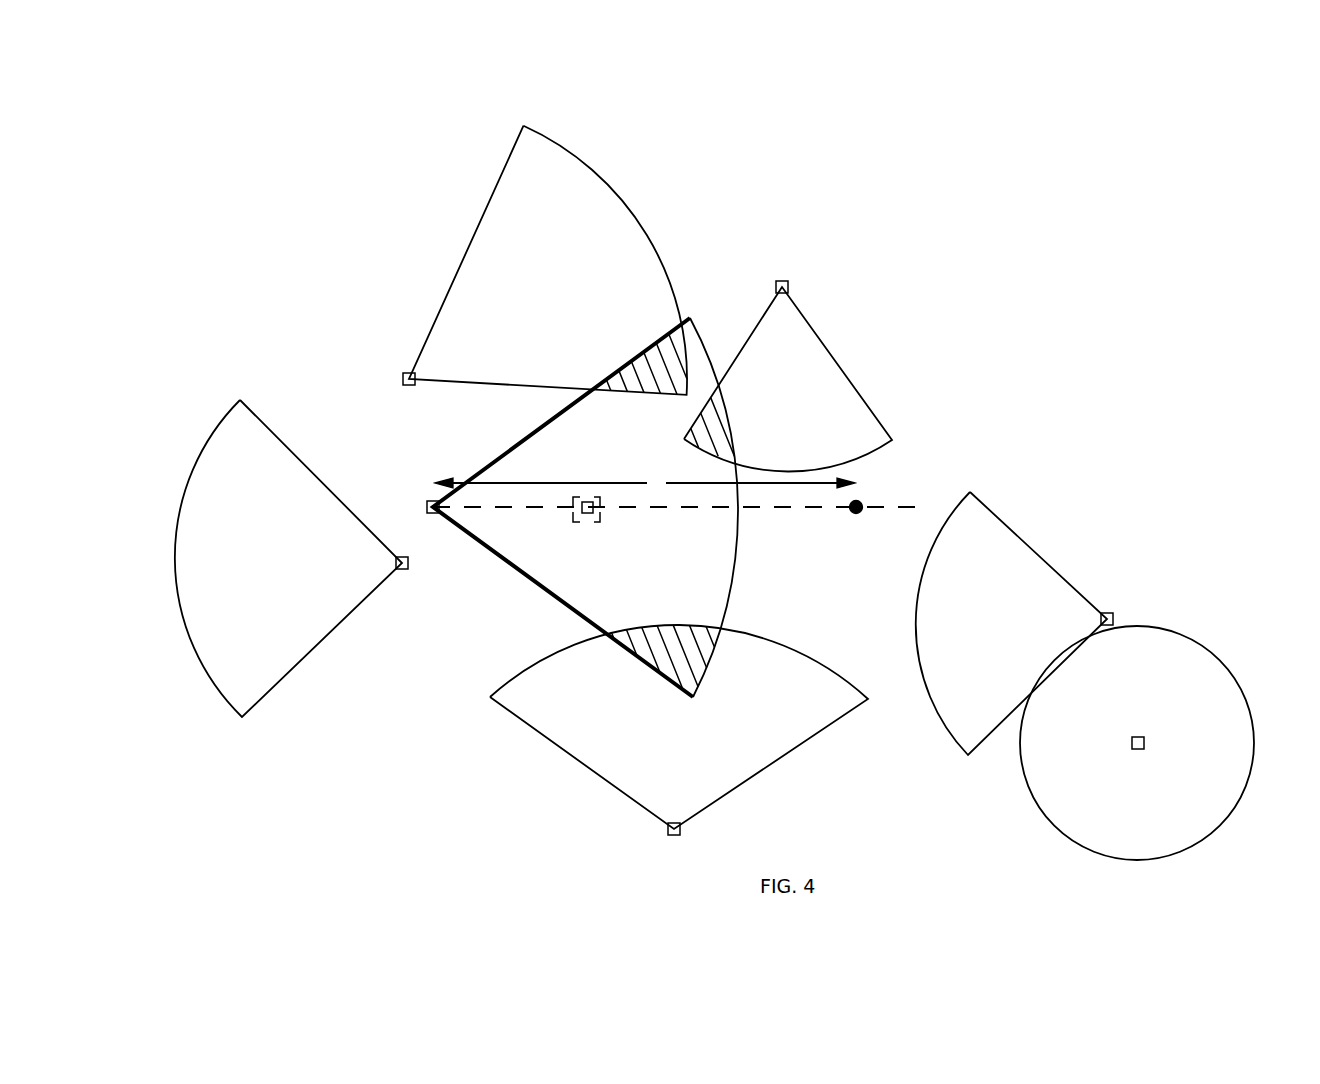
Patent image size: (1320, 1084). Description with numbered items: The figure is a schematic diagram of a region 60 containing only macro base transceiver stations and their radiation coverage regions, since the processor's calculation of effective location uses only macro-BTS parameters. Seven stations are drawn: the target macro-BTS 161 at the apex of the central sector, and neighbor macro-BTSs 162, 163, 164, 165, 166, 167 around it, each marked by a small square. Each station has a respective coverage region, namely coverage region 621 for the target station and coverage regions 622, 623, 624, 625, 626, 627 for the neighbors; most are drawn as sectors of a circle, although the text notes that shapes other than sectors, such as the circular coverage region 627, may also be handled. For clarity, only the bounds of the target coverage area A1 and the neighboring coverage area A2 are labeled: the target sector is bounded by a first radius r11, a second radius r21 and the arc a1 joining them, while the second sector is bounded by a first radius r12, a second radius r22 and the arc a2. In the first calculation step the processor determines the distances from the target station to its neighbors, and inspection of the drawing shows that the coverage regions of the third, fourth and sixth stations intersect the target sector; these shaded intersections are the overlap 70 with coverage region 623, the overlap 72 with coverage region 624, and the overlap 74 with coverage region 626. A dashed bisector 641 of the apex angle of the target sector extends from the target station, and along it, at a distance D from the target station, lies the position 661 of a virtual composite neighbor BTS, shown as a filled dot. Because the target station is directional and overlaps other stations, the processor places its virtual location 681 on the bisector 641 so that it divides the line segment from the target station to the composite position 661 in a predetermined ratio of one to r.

The region 60 is at (1010, 240).
The coverage region of first macro-BTS 621 is at (710, 587).
The coverage region of second macro-BTS 622 is at (305, 635).
The coverage region of third macro-BTS 623 is at (482, 266).
The coverage region of fourth macro-BTS 624 is at (823, 375).
The coverage region of fifth macro-BTS 625 is at (1038, 578).
The coverage region of sixth macro-BTS 626 is at (613, 767).
The coverage region of seventh macro-BTS 627 is at (1192, 672).
The target macro-BTS 161 is at (436, 503).
The second macro-BTS 162 is at (400, 570).
The third macro-BTS 163 is at (402, 377).
The fourth macro-BTS 164 is at (783, 281).
The fifth macro-BTS 165 is at (1117, 620).
The sixth macro-BTS 166 is at (673, 836).
The seventh macro-BTS 167 is at (1147, 745).
The overlap 70 is at (684, 330).
The overlap 72 is at (722, 382).
The overlap 74 is at (657, 640).
The virtual location 681 is at (587, 513).
The bisector 641 is at (785, 508).
The position of virtual composite neighbor BTS 661 is at (856, 513).
The distance D is at (645, 484).
The coverage area of target BTS A1 is at (659, 577).
The arc of coverage region A₁ a1 is at (737, 527).
The first radius of coverage region A₁ r11 is at (530, 580).
The second radius of coverage region A₁ r21 is at (547, 418).
The coverage area of second BTS A2 is at (290, 579).
The arc of coverage region A₂ a2 is at (190, 638).
The first radius of coverage region A₂ r12 is at (277, 683).
The second radius of coverage region A₂ r22 is at (297, 453).